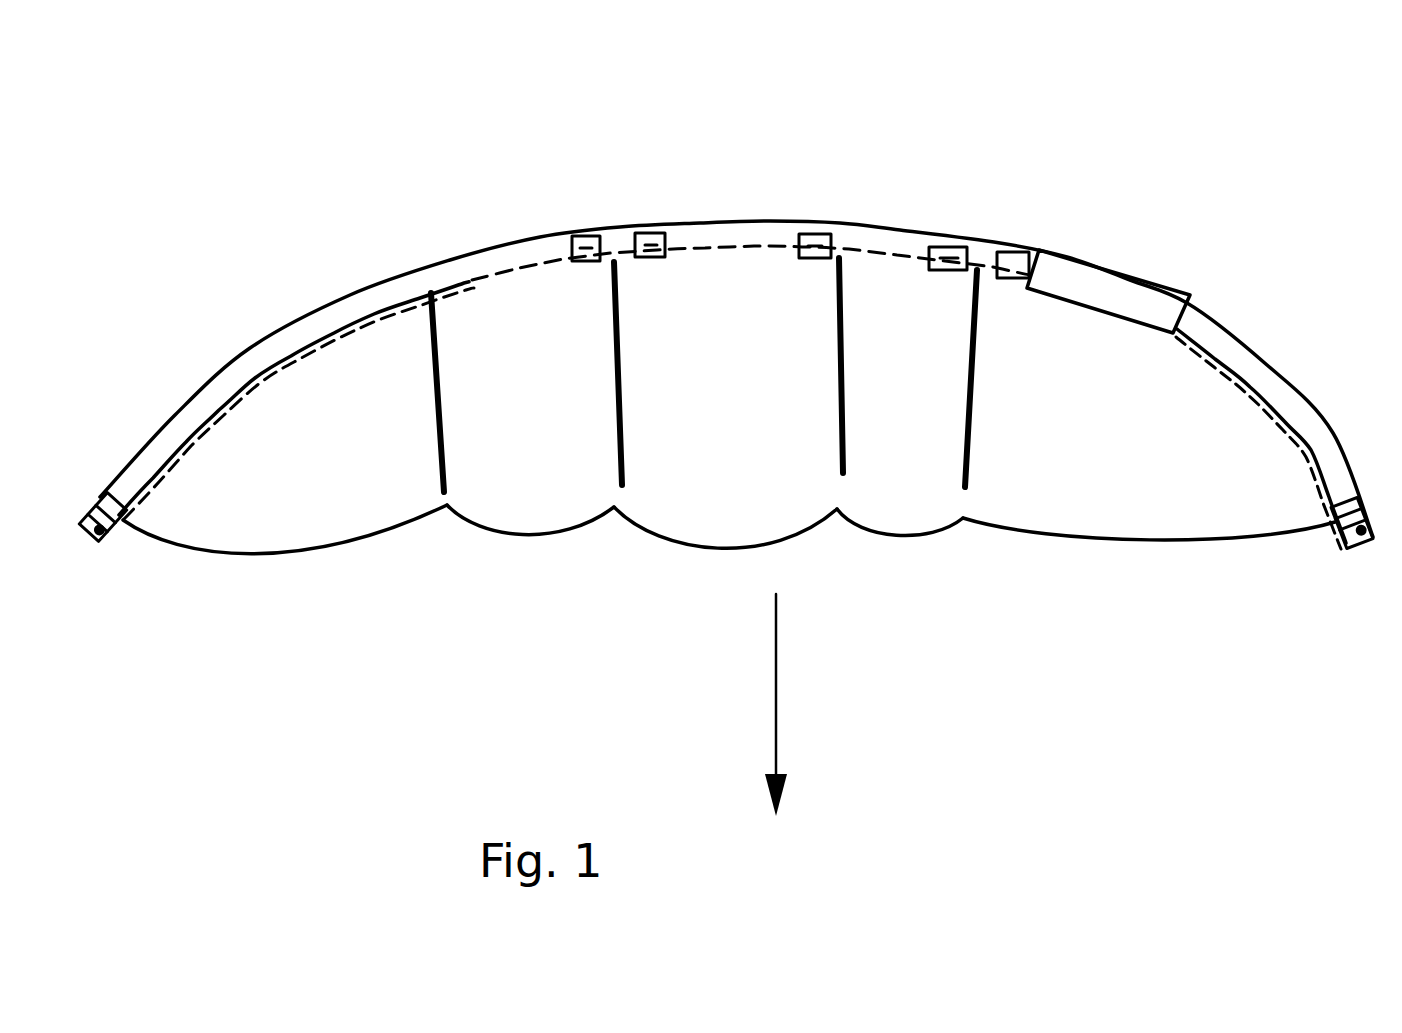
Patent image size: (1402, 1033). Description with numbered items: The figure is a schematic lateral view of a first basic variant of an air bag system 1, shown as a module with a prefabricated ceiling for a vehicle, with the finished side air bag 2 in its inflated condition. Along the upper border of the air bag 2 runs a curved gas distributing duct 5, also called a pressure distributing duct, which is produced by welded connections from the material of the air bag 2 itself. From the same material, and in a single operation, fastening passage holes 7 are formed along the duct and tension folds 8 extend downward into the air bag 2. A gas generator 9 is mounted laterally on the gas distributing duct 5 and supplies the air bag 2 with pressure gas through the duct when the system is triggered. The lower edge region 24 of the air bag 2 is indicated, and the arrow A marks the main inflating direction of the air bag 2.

The air bag system 1 is at (333, 183).
The side air bag 2 is at (729, 601).
The gas distributing duct 5 is at (755, 233).
The fastening passage holes 7 is at (578, 238).
The tension folds 8 is at (612, 448).
The gas generator 9 is at (1128, 293).
The lower edge of fabric 24 is at (710, 568).
The arrow A is at (776, 718).